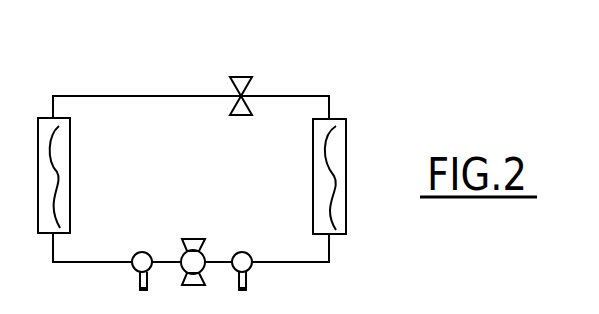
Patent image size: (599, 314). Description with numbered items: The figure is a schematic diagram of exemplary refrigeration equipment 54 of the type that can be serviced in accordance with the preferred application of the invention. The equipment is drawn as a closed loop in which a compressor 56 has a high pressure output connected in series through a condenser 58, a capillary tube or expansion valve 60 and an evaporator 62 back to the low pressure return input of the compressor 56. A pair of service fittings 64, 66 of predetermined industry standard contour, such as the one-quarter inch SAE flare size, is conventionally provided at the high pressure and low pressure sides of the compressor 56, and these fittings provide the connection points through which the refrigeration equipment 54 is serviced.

The refrigeration equipment 54 is at (223, 22).
The compressor 56 is at (195, 239).
The condenser 58 is at (347, 143).
The capillary tube or expansion valve 60 is at (247, 79).
The evaporator 62 is at (70, 185).
The service fitting 64 is at (248, 289).
The service fitting 66 is at (138, 292).